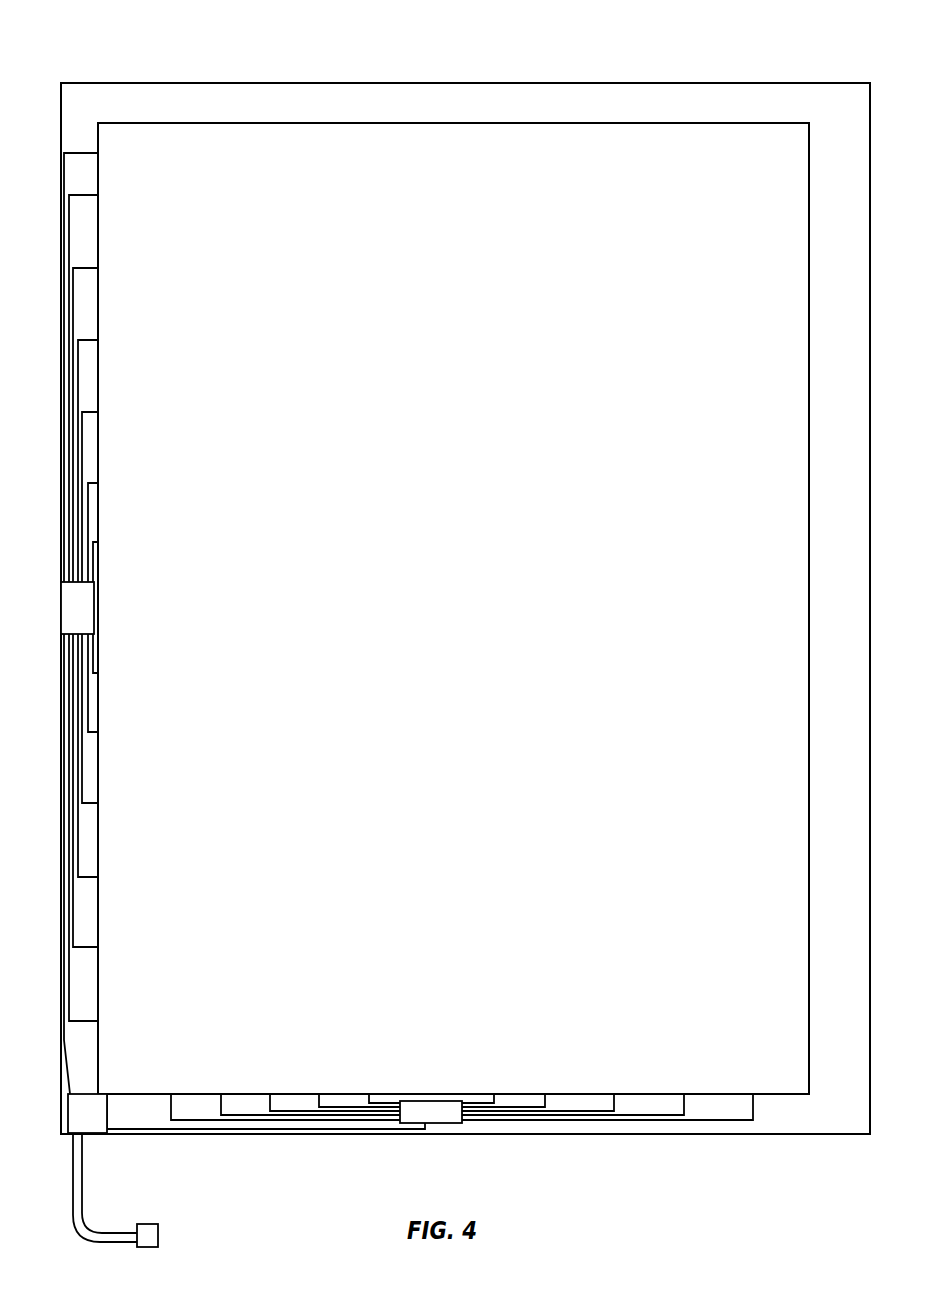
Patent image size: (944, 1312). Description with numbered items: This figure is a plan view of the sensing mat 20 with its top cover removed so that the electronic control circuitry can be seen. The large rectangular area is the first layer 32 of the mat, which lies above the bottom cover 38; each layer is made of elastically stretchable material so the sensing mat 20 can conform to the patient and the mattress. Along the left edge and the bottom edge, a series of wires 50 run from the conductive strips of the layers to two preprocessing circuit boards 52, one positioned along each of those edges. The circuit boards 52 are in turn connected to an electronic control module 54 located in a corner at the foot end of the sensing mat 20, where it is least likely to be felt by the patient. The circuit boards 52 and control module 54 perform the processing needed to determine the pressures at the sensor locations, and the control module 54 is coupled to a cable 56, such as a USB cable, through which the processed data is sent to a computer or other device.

The sensing mat 20 is at (598, 79).
The first layer 32 is at (257, 147).
The bottom cover 38 is at (740, 108).
The wire 50 is at (86, 781).
The preprocessing circuit board 52 is at (95, 609).
The electronic control module 54 is at (93, 1128).
The cable 56 is at (83, 1203).